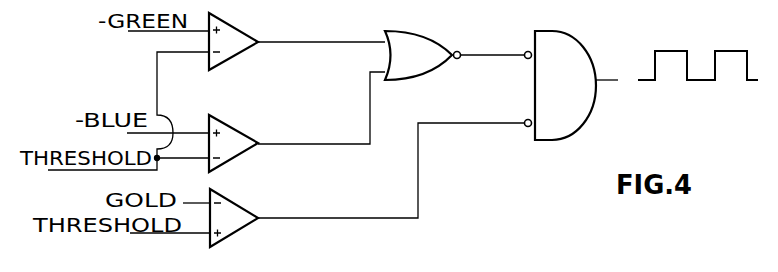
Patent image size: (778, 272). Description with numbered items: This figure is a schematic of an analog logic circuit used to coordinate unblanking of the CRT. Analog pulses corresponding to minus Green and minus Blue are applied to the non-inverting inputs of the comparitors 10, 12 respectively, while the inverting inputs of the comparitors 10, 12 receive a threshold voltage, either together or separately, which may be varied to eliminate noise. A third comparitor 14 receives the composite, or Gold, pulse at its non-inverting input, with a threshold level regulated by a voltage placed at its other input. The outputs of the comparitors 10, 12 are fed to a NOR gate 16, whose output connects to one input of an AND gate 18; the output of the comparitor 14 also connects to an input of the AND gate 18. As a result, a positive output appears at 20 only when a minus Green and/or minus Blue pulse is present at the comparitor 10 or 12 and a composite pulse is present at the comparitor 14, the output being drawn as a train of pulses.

The comparitor 10 is at (241, 34).
The comparitor 12 is at (238, 140).
The comparitor 14 is at (237, 211).
The NOR gate 16 is at (427, 44).
The AND gate 18 is at (568, 62).
The positive output 20 is at (606, 80).